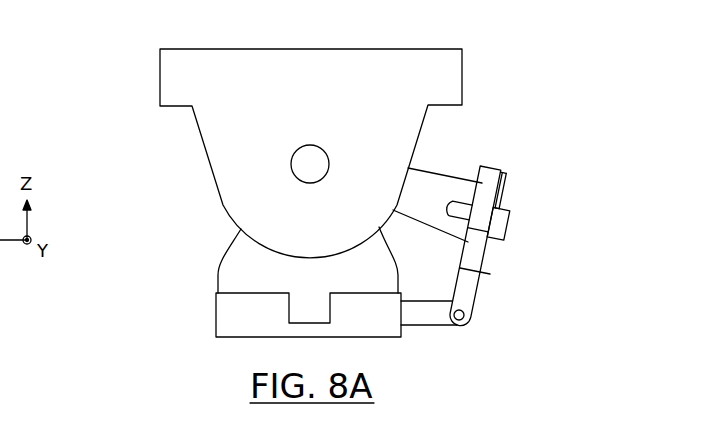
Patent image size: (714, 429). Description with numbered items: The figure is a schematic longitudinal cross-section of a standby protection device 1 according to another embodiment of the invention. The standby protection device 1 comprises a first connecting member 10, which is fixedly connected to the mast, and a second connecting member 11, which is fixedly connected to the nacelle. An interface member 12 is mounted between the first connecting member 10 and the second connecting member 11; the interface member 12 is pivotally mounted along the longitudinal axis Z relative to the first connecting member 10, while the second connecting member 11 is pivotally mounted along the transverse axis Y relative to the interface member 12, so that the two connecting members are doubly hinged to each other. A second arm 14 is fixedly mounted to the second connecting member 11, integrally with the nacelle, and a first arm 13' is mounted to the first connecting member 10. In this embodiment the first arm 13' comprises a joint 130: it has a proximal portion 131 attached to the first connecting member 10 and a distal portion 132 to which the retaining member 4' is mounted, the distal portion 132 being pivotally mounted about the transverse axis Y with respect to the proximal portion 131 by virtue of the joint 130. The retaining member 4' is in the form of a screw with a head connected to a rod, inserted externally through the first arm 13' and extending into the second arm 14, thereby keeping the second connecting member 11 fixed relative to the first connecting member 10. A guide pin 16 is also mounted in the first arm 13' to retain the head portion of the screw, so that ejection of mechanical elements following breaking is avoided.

The standby protection device 1 is at (509, 59).
The second connecting member 11 is at (160, 76).
The interface member 12 is at (227, 250).
The first connecting member 10 is at (216, 313).
The second arm 14 is at (430, 168).
The guide pin 16 is at (506, 176).
The retaining member 4' is at (516, 224).
The first arm 13' is at (513, 271).
The joint 130 is at (466, 318).
The proximal portion 131 is at (437, 325).
The distal portion 132 is at (483, 273).